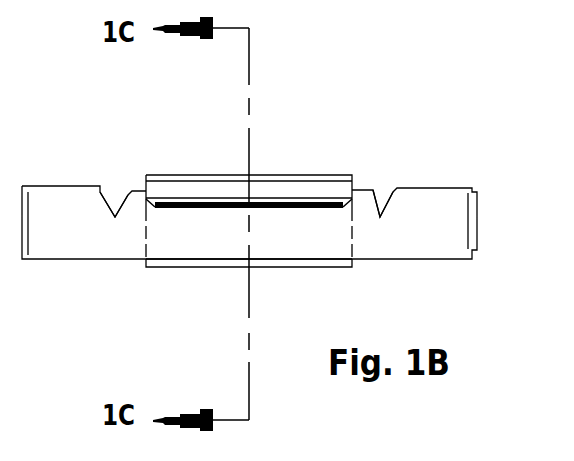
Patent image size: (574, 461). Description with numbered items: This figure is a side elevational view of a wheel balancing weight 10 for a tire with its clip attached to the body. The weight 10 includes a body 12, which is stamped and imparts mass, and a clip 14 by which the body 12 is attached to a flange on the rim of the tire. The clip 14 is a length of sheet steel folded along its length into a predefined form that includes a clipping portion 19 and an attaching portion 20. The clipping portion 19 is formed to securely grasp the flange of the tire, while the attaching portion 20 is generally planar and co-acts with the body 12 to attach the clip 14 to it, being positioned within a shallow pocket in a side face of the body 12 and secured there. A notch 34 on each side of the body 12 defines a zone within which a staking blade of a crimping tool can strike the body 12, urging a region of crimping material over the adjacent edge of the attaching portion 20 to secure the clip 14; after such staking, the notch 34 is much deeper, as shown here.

The wheel balancing weight 10 is at (58, 127).
The body 12 is at (440, 233).
The clip 14 is at (343, 155).
The clipping portion 19 is at (232, 175).
The attaching portion 20 is at (281, 268).
The notch 34 is at (117, 200).